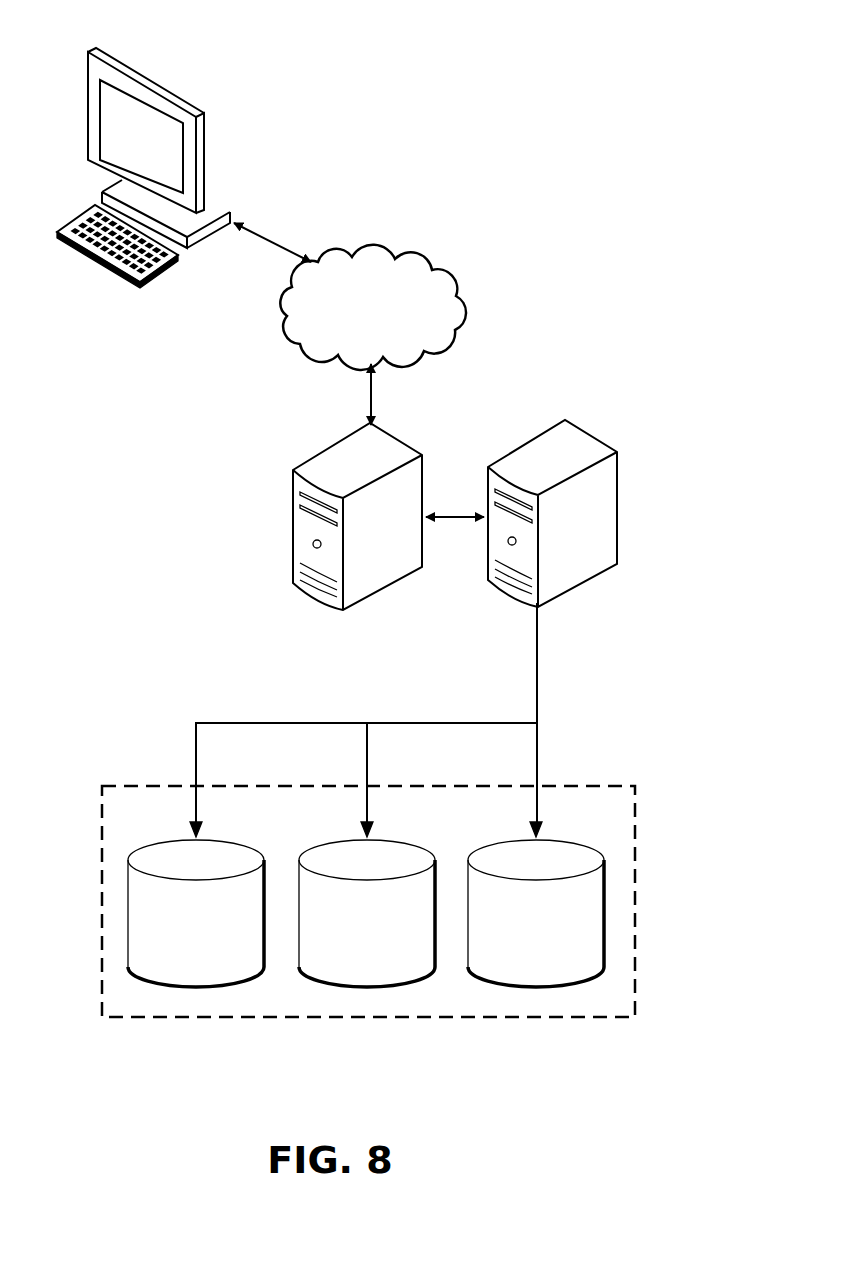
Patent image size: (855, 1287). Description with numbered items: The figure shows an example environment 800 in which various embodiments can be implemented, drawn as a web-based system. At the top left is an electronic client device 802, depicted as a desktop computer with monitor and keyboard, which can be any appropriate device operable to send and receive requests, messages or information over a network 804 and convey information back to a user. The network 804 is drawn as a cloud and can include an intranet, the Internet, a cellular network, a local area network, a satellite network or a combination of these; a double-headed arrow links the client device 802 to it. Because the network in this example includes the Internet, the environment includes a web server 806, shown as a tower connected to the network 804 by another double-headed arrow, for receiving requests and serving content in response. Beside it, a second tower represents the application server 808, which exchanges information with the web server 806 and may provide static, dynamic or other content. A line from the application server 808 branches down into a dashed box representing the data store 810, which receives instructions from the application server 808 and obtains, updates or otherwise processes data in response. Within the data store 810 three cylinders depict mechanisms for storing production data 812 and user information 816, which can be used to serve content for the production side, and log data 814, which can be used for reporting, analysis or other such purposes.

The environment 800 is at (379, 556).
The electronic client device 802 is at (160, 86).
The network 804 is at (404, 263).
The web server 806 is at (293, 517).
The application server 808 is at (508, 597).
The data store 810 is at (132, 1018).
The production data 812 is at (193, 987).
The log data 814 is at (366, 987).
The user information 816 is at (535, 985).